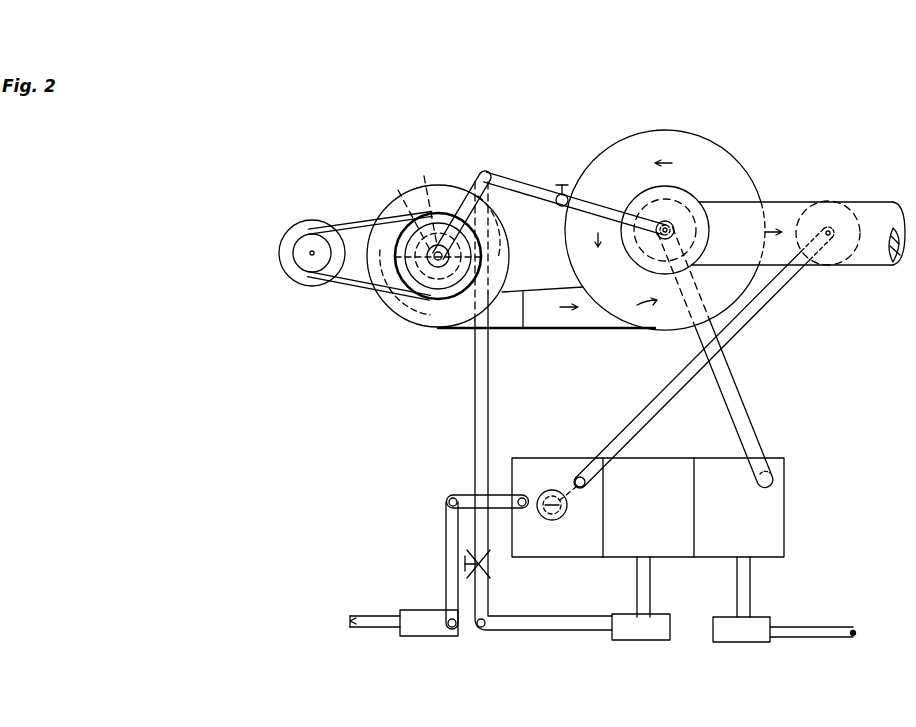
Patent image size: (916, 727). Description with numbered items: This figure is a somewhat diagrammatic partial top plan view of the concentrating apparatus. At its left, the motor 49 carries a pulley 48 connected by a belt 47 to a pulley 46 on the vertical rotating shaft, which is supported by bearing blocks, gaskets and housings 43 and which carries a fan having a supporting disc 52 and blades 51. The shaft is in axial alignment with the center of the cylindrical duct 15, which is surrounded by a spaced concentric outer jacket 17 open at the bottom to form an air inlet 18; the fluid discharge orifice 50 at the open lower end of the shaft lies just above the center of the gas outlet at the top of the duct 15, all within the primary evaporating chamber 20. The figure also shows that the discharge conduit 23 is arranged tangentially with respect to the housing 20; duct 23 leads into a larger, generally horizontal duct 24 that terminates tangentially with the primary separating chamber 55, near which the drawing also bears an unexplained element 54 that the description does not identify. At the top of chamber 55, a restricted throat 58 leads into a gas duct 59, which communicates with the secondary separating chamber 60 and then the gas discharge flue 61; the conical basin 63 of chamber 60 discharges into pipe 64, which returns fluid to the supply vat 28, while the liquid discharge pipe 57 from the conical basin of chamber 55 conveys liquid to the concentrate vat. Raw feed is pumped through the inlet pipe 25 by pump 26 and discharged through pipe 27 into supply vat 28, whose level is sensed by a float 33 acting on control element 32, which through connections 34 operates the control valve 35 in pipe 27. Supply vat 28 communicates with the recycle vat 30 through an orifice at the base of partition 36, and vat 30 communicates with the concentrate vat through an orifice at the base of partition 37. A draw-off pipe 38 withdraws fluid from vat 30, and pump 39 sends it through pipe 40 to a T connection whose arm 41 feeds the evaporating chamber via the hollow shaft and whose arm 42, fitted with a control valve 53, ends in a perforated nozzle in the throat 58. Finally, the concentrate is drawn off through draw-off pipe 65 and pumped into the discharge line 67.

The cylindrical duct 15 is at (387, 292).
The outer jacket 17 is at (421, 201).
The air inlet 18 is at (398, 311).
The primary evaporating chamber 20 is at (503, 254).
The duct 23 is at (508, 318).
The duct 24 is at (614, 318).
The inlet pipe 25 is at (380, 627).
The pump 26 is at (434, 640).
The pipe 27 is at (462, 492).
The supply vat 28 is at (555, 551).
The recycle vat 30 is at (681, 558).
The control element 32 is at (552, 490).
The float 33 is at (580, 476).
The connections 34 is at (540, 494).
The control valve 35 is at (522, 512).
The partition 36 is at (604, 522).
The partition 37 is at (697, 510).
The draw-off pipe 38 is at (651, 594).
The pump 39 is at (661, 639).
The pipe 40 is at (474, 380).
The arm 41 is at (476, 176).
The arm 42 is at (533, 178).
The bearing blocks, gaskets and housings 43 is at (402, 213).
The pulley 46 is at (428, 320).
The belt 47 is at (348, 228).
The pulley 48 is at (283, 238).
The motor 49 is at (290, 270).
The discharge orifice 50 is at (500, 268).
The blades 51 is at (504, 236).
The supporting disc 52 is at (498, 216).
The control valve 53 is at (560, 182).
The dashed arc 54 is at (618, 278).
The primary separating chamber 55 is at (732, 178).
The liquid discharge pipe 57 is at (738, 396).
The restricted throat 58 is at (645, 199).
The gas duct 59 is at (688, 198).
The secondary separating chamber 60 is at (846, 208).
The gas discharge flue 61 is at (886, 206).
The conical basin 63 is at (853, 272).
The pipe 64 is at (762, 300).
The draw-off pipe 65 is at (752, 582).
The discharge line 67 is at (819, 627).